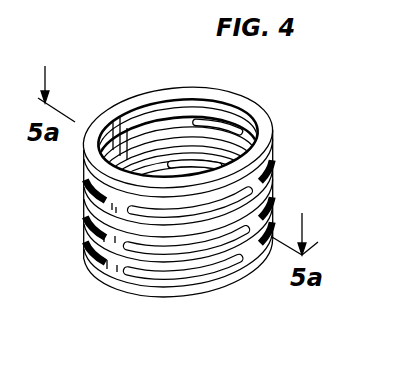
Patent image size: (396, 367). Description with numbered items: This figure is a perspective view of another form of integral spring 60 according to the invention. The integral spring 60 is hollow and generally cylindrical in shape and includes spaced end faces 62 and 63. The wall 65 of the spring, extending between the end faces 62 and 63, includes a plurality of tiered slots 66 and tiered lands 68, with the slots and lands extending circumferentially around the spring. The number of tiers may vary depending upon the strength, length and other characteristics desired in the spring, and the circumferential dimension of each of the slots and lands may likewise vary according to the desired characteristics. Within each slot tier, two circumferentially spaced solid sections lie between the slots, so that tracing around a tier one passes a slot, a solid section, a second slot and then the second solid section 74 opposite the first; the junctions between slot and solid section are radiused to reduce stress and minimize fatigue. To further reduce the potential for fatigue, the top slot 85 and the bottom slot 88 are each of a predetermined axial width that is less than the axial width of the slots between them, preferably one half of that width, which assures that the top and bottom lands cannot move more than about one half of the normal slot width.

The integral spring 60 is at (190, 194).
The end face 62 is at (258, 127).
The end face 63 is at (256, 267).
The wall 65 is at (273, 201).
The tiered slots 66 is at (213, 102).
The tiered lands 68 is at (83, 235).
The second solid section 74 is at (138, 158).
The top slot 85 is at (85, 163).
The bottom slot 88 is at (211, 288).